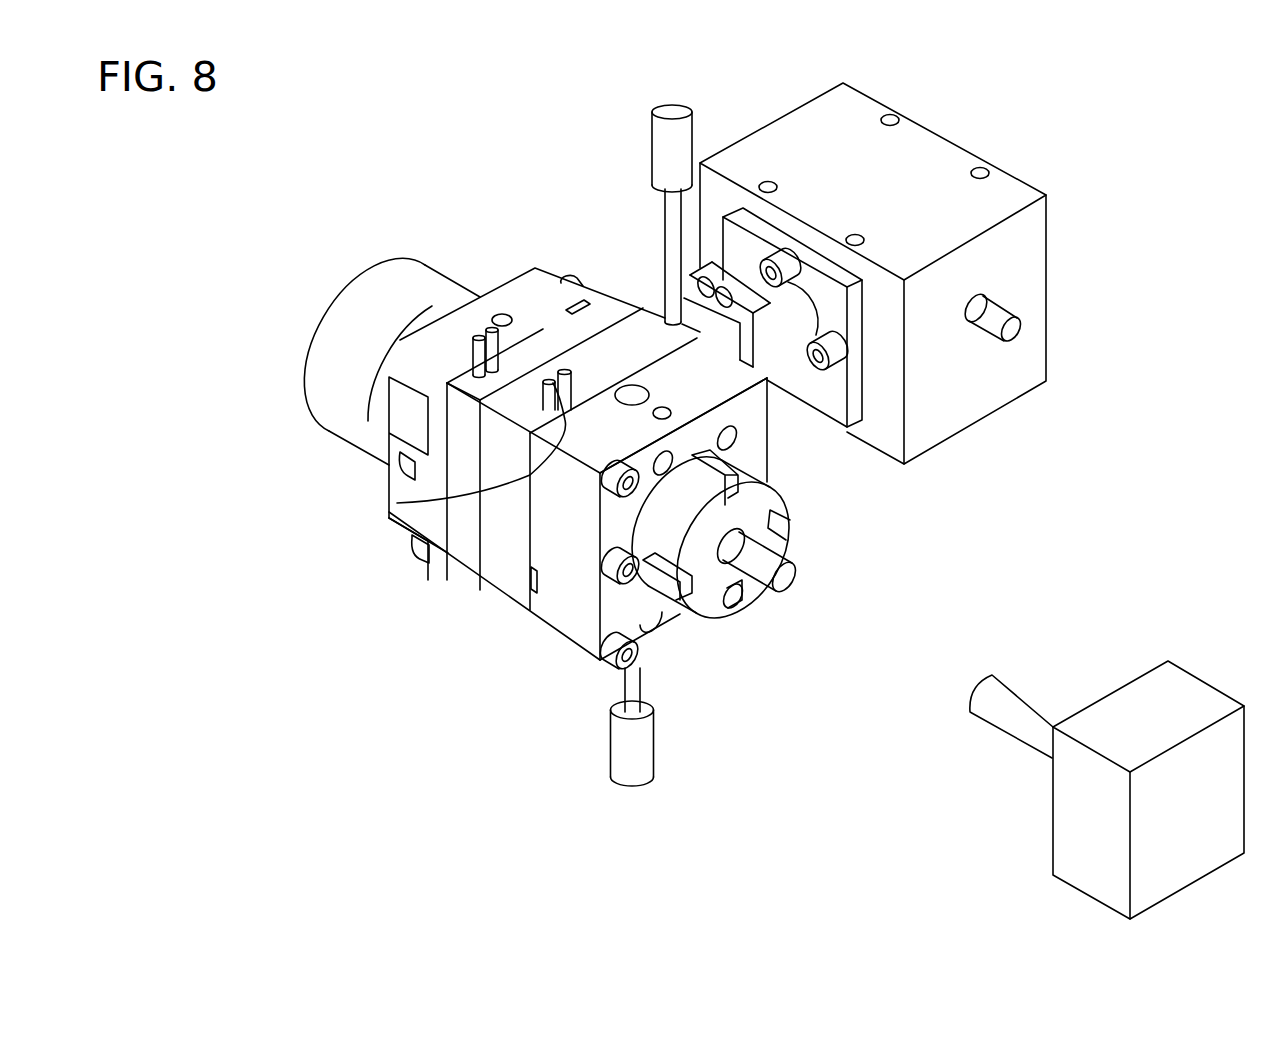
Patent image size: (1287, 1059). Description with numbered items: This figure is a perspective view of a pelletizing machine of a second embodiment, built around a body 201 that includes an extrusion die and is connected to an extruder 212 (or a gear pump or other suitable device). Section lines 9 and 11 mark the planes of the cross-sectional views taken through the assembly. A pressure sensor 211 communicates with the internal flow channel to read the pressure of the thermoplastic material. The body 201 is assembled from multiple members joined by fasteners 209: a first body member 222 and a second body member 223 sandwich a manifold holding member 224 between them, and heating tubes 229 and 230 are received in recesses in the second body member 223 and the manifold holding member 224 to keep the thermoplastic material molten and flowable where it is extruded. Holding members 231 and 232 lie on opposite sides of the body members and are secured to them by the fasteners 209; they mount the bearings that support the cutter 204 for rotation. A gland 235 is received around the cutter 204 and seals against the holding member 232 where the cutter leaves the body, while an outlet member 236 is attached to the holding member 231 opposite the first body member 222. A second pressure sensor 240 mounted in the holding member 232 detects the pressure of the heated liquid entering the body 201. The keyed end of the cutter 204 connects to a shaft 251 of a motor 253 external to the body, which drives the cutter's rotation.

The section line 9- 9 is at (286, 230).
The section line 11- 11 is at (454, 120).
The body 201 is at (630, 215).
The cutter 204 is at (793, 580).
The fasteners 209 is at (640, 660).
The pressure sensor 211 is at (672, 110).
The extruder 212 is at (760, 130).
The first body member 222 is at (518, 280).
The second body member 223 is at (507, 595).
The manifold holding member 224 is at (425, 565).
The heating tube 229 is at (410, 503).
The heating tube 230 is at (420, 372).
The holding member 231 is at (440, 300).
The holding member 232 is at (575, 633).
The gland 235 is at (785, 500).
The outlet member 236 is at (368, 280).
The pressure sensor 240 is at (630, 784).
The shaft 251 is at (1038, 695).
The motor 253 is at (1237, 702).